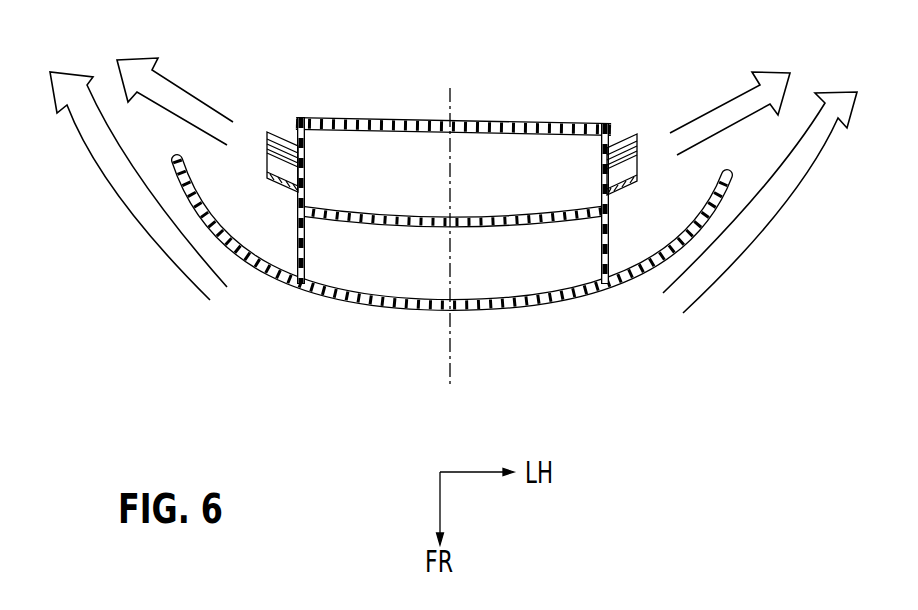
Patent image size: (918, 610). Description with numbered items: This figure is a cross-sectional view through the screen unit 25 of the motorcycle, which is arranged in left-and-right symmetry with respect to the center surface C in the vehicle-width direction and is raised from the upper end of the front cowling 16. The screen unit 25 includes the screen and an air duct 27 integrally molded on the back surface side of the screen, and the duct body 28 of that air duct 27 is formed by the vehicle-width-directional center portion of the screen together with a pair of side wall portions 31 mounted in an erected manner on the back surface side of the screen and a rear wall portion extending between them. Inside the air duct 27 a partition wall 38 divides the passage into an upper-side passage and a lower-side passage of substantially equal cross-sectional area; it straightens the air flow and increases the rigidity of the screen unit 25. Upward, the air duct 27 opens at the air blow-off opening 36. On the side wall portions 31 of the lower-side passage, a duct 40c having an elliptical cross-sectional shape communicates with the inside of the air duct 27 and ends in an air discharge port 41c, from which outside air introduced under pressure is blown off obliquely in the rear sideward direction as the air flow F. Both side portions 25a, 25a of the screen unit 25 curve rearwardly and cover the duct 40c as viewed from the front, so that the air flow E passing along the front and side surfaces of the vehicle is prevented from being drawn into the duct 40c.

The screen unit 25 is at (357, 309).
The front cowling 16 is at (452, 283).
The side portions 25a is at (250, 273).
The duct body 28 is at (402, 118).
The air duct 27 is at (453, 72).
The air blow-off opening 36 is at (486, 160).
The partition wall 38 is at (512, 212).
The side wall portions 31 is at (613, 243).
The duct 40c is at (262, 154).
The air discharge port 41c is at (266, 143).
The center surface C is at (448, 348).
The air flow E is at (137, 200).
The air flow F is at (170, 83).